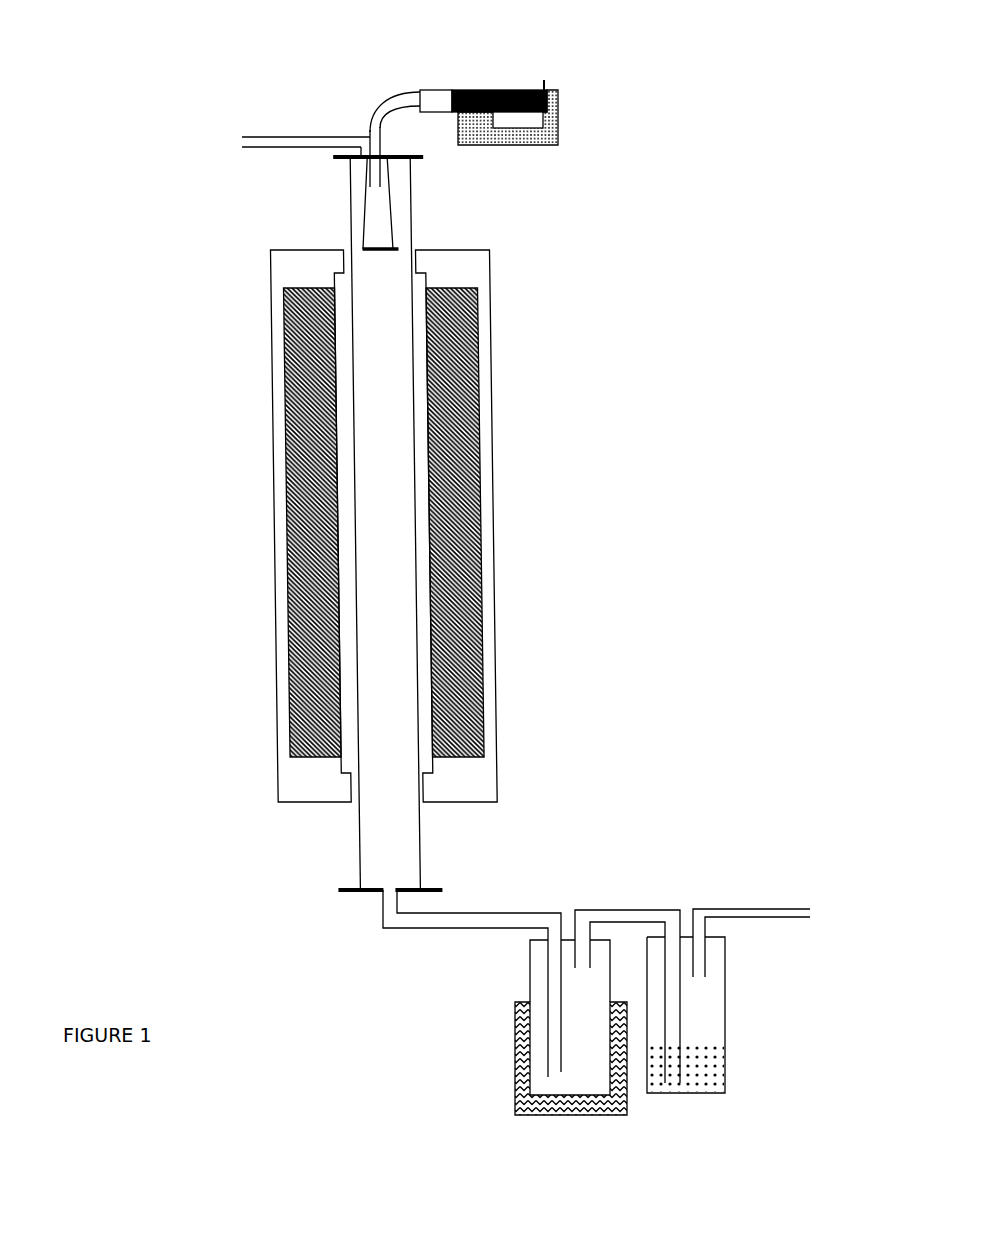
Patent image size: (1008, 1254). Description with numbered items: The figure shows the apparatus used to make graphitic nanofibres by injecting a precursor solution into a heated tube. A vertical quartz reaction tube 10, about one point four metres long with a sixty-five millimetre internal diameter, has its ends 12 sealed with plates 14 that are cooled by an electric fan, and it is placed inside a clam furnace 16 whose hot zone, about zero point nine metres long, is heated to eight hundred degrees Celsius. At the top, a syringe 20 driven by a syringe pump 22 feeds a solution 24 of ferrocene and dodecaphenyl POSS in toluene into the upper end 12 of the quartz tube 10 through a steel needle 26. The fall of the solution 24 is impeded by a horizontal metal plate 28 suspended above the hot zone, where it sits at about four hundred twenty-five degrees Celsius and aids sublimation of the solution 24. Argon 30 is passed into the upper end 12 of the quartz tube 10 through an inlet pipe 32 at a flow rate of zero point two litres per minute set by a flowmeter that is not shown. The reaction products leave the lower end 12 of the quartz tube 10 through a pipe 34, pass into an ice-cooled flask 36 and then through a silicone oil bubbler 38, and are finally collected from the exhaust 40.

The vertical quartz reaction tube 10 is at (428, 523).
The ends 12 is at (432, 168).
The plates 14 is at (352, 165).
The clam furnace 16 is at (423, 526).
The syringe 20 is at (517, 92).
The syringe pump 22 is at (567, 117).
The solution 24 is at (547, 91).
The steel needle 26 is at (368, 132).
The horizontal metal plate 28 is at (400, 248).
The argon 30 is at (272, 172).
The inlet pipe 32 is at (276, 152).
The pipe 34 is at (447, 927).
The ice-cooled flask 36 is at (572, 1117).
The silicone oil bubbler 38 is at (683, 1096).
The exhaust 40 is at (795, 912).